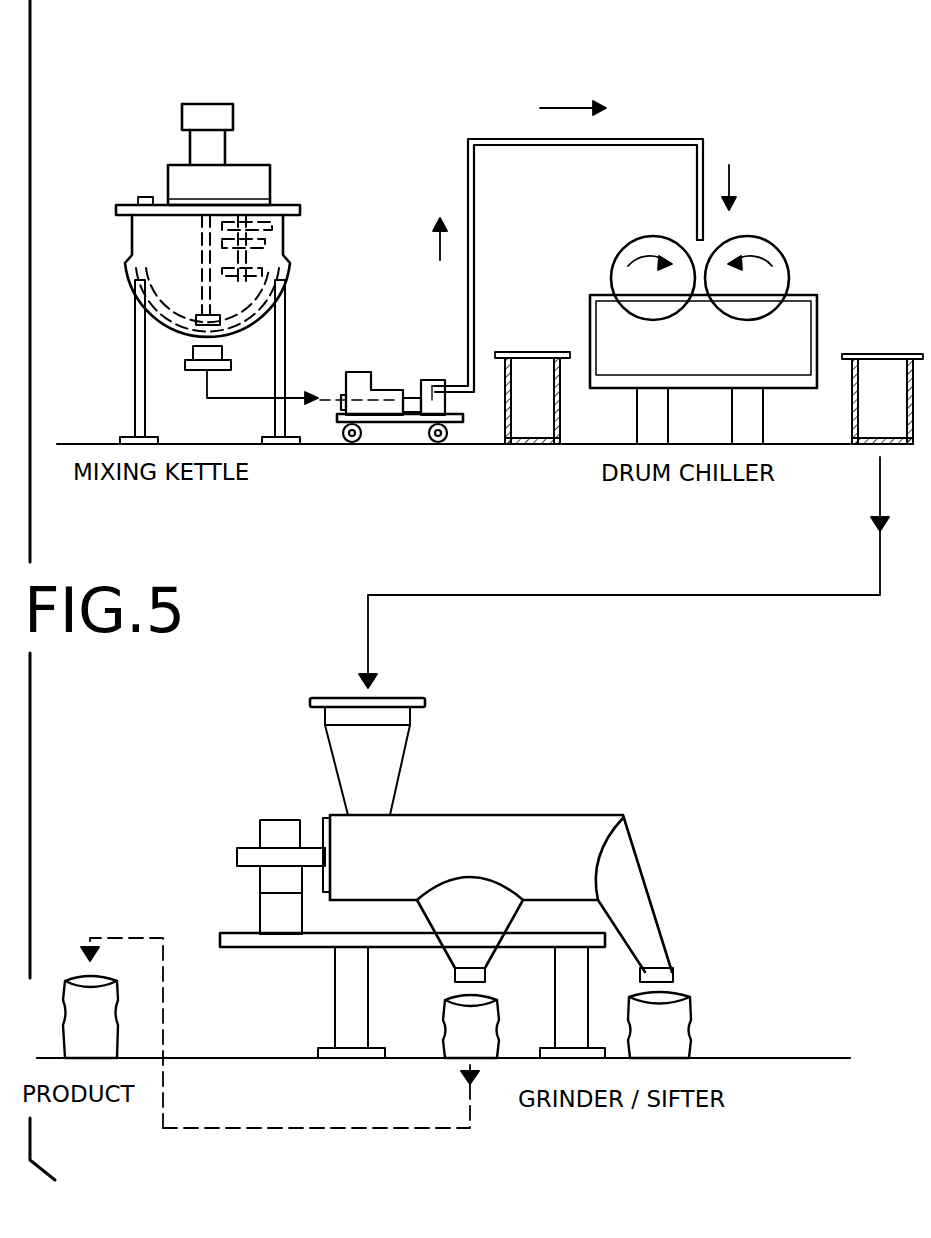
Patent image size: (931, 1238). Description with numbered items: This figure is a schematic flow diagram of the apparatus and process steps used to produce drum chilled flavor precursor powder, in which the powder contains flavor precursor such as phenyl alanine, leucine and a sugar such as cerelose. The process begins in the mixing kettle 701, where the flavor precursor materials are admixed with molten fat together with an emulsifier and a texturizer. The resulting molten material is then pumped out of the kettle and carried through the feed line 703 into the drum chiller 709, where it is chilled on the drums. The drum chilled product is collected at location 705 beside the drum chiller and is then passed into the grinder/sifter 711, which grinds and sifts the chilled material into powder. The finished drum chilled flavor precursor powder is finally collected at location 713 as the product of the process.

The mixing kettle 701 is at (150, 240).
The feed line 703 is at (494, 146).
The collection location 705 is at (873, 368).
The drum chiller 709 is at (625, 396).
The grinder/sifter 711 is at (470, 832).
The collection location 713 is at (78, 1038).